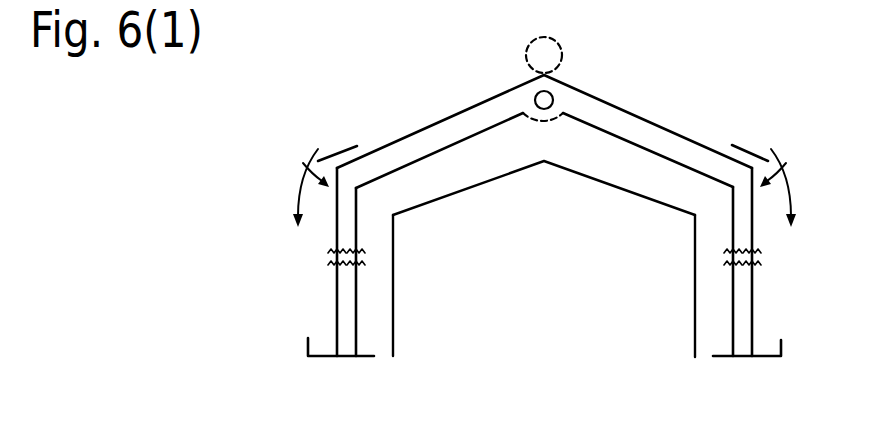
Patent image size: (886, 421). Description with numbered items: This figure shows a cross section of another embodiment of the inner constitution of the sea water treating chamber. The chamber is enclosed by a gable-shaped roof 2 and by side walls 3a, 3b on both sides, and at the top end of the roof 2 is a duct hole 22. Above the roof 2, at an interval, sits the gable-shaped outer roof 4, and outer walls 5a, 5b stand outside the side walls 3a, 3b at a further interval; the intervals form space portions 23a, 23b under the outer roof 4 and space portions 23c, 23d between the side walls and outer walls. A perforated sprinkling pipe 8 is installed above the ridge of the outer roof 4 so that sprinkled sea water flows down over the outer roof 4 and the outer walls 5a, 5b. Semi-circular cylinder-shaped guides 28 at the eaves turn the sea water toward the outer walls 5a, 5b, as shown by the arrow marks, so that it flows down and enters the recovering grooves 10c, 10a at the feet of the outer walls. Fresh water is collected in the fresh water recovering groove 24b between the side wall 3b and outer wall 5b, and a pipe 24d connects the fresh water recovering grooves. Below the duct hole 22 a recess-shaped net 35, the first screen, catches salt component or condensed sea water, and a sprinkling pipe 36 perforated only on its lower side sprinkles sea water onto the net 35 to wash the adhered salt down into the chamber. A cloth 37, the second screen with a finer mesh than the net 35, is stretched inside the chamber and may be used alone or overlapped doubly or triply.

The roof 2 is at (569, 228).
The side wall 3a is at (357, 233).
The side wall 3b is at (732, 233).
The outer roof 4 is at (544, 215).
The outer wall 5a is at (336, 300).
The outer wall 5b is at (753, 300).
The sprinkling pipe 8 is at (562, 53).
The recovering groove 10a is at (772, 347).
The recovering groove 10c is at (318, 347).
The duct hole 22 is at (533, 113).
The space portion 23a is at (458, 122).
The space portion 23b is at (647, 132).
The space portion 23c is at (345, 243).
The space portion 23d is at (743, 310).
The fresh water recovering groove 24b is at (743, 348).
The pipe 24d is at (345, 320).
The guide 28 is at (310, 155).
The net (first screen) 35 is at (520, 129).
The sprinkling pipe 36 is at (550, 93).
The cloth (second screen) 37 is at (470, 191).